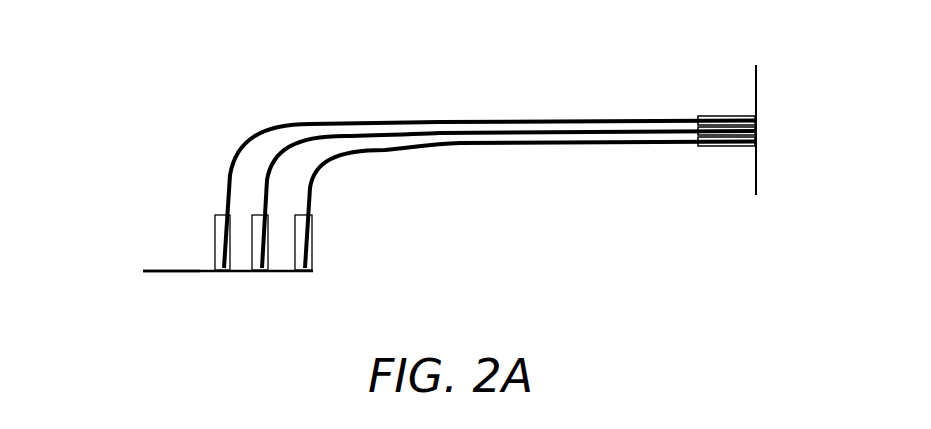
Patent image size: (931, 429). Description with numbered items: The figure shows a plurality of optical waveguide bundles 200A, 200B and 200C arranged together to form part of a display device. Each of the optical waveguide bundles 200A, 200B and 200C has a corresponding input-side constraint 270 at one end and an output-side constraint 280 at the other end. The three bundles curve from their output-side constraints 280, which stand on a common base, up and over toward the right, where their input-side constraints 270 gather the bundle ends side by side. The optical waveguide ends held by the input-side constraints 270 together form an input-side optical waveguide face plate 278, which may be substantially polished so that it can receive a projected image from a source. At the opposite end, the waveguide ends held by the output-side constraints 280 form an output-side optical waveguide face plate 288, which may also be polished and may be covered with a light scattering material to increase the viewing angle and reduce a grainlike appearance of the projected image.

The optical waveguide bundle 200A is at (253, 143).
The optical waveguide bundle 200B is at (487, 129).
The optical waveguide bundle 200C is at (311, 188).
The input-side constraint 270 is at (722, 146).
The input-side optical waveguide face plate 278 is at (757, 85).
The output-side constraint 280 is at (313, 271).
The output-side optical waveguide face plate 288 is at (160, 272).